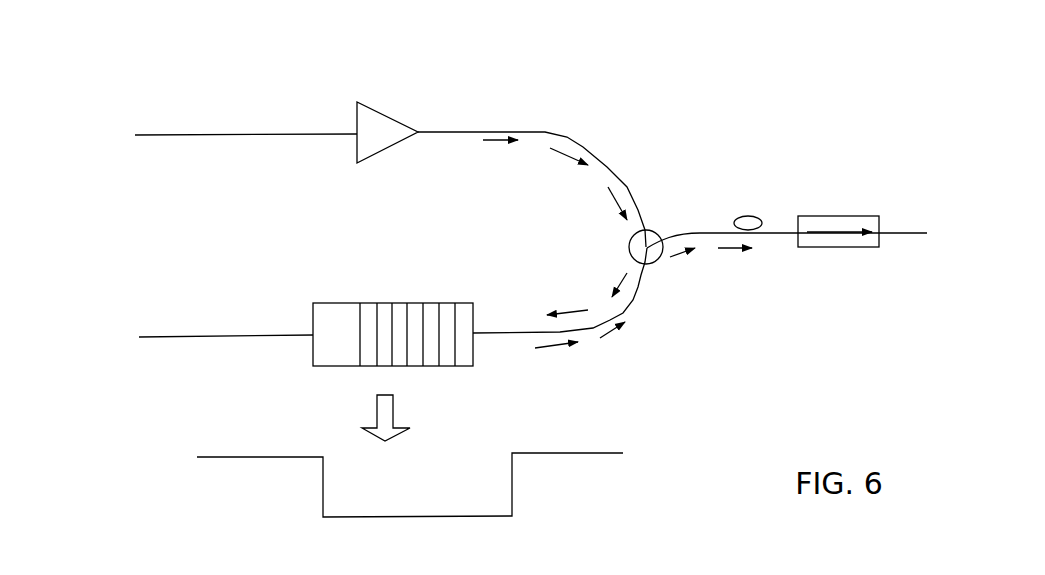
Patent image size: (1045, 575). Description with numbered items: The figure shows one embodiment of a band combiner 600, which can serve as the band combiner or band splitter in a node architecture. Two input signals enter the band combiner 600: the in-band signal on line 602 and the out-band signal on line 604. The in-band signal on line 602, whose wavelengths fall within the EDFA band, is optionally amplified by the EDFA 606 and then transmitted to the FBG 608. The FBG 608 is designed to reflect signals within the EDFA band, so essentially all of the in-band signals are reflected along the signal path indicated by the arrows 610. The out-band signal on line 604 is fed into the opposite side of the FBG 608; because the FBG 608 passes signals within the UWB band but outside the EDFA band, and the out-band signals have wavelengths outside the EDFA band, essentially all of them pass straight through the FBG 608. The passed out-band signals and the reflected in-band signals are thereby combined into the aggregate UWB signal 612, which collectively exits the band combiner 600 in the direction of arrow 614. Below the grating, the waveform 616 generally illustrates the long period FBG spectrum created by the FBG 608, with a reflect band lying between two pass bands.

The band combiner 600 is at (717, 126).
The in-band signal line 602 is at (277, 136).
The out-band signal line 604 is at (238, 338).
The EDFA 606 is at (375, 112).
The FBG 608 is at (424, 374).
The arrows 610 is at (655, 280).
The aggregate UWB signal 612 is at (753, 217).
The arrow 614 is at (842, 240).
The waveform 616 is at (617, 477).